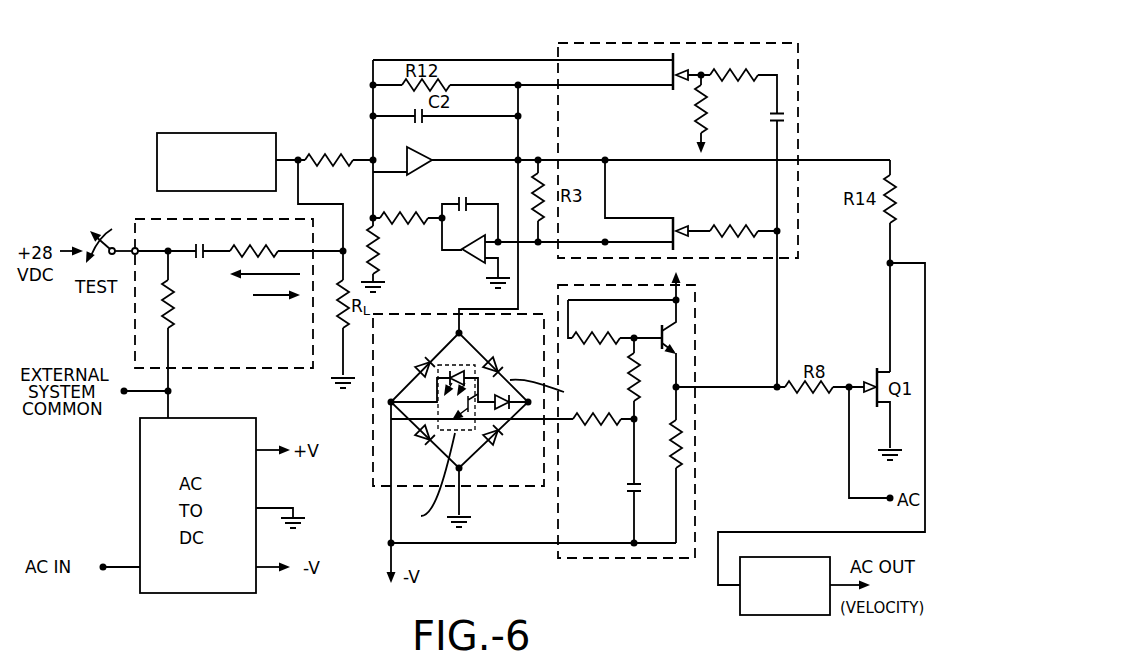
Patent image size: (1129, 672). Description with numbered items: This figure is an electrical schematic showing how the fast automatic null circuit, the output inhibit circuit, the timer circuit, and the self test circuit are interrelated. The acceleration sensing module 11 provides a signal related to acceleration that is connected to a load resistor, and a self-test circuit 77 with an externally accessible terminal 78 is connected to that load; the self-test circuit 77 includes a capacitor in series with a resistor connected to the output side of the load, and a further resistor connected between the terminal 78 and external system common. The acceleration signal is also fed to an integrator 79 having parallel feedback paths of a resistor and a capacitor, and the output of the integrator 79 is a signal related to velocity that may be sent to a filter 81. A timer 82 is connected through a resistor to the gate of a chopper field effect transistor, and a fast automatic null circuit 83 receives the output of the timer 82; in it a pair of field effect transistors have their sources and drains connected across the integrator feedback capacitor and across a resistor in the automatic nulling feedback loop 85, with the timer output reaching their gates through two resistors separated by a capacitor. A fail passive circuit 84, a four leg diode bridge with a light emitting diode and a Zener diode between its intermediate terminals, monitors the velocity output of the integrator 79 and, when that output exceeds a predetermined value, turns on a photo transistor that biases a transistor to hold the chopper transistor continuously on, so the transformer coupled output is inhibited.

The acceleration sensing module 11 is at (275, 132).
The self-test circuit 77 is at (270, 368).
The externally accessible terminal 78 is at (132, 244).
The integrator 79 is at (420, 150).
The filter 81 is at (802, 617).
The timer 82 is at (684, 336).
The fast automatic null circuit 83 is at (708, 43).
The fail passive circuit 84 is at (372, 454).
The automatic nulling feedback loop 85 is at (428, 197).